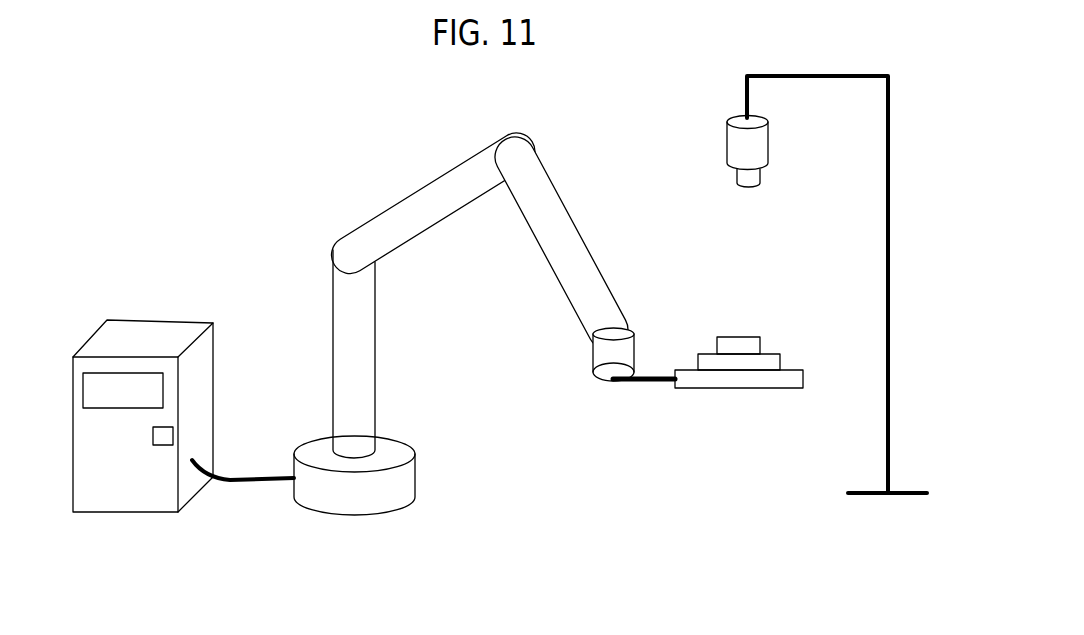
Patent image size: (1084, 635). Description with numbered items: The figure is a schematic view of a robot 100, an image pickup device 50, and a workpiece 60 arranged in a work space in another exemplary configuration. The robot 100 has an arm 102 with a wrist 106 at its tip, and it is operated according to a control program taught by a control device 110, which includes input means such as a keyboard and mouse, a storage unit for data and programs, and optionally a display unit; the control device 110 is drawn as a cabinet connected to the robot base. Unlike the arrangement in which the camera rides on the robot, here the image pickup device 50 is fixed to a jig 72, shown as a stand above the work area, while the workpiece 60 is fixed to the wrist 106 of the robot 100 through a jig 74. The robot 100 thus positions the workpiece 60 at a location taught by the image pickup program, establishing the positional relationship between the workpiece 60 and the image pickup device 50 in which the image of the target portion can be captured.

The robot 100 is at (498, 306).
The arm 102 is at (548, 252).
The wrist 106 is at (634, 348).
The control device 110 is at (153, 338).
The image pickup device 50 is at (725, 147).
The workpiece 60 is at (767, 352).
The jig 72 is at (892, 273).
The jig 74 is at (798, 390).